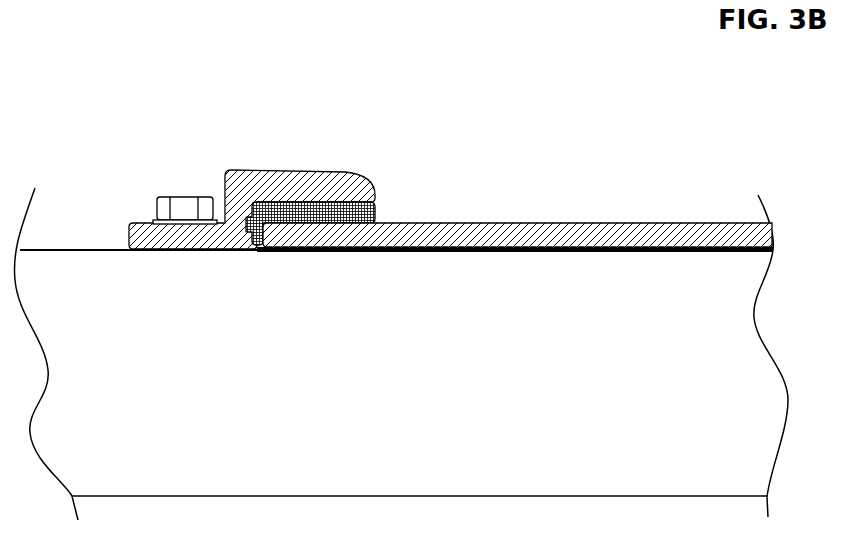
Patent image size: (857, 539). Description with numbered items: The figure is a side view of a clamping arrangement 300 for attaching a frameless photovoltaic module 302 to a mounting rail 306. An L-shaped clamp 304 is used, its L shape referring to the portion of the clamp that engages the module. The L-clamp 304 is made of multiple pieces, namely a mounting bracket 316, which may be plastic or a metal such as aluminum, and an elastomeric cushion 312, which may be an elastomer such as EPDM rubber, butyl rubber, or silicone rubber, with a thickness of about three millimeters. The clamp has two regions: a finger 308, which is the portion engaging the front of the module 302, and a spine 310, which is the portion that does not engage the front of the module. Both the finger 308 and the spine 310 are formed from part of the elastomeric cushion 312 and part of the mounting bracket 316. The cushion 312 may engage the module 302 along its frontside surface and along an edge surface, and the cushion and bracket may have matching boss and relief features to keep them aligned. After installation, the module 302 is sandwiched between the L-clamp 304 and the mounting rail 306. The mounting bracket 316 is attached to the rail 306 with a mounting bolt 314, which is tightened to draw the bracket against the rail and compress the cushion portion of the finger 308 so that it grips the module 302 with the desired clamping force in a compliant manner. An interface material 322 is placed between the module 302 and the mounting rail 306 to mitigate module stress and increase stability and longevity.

The clamping arrangement 300 is at (703, 124).
The frameless photovoltaic module 302 is at (600, 236).
The L-shaped clamp 304 is at (375, 102).
The mounting rail 306 is at (237, 472).
The finger 308 is at (375, 165).
The spine 310 is at (262, 165).
The elastomeric cushion 312 is at (333, 217).
The mounting bolt 314 is at (185, 206).
The mounting bracket 316 is at (233, 233).
The interface material 322 is at (572, 252).